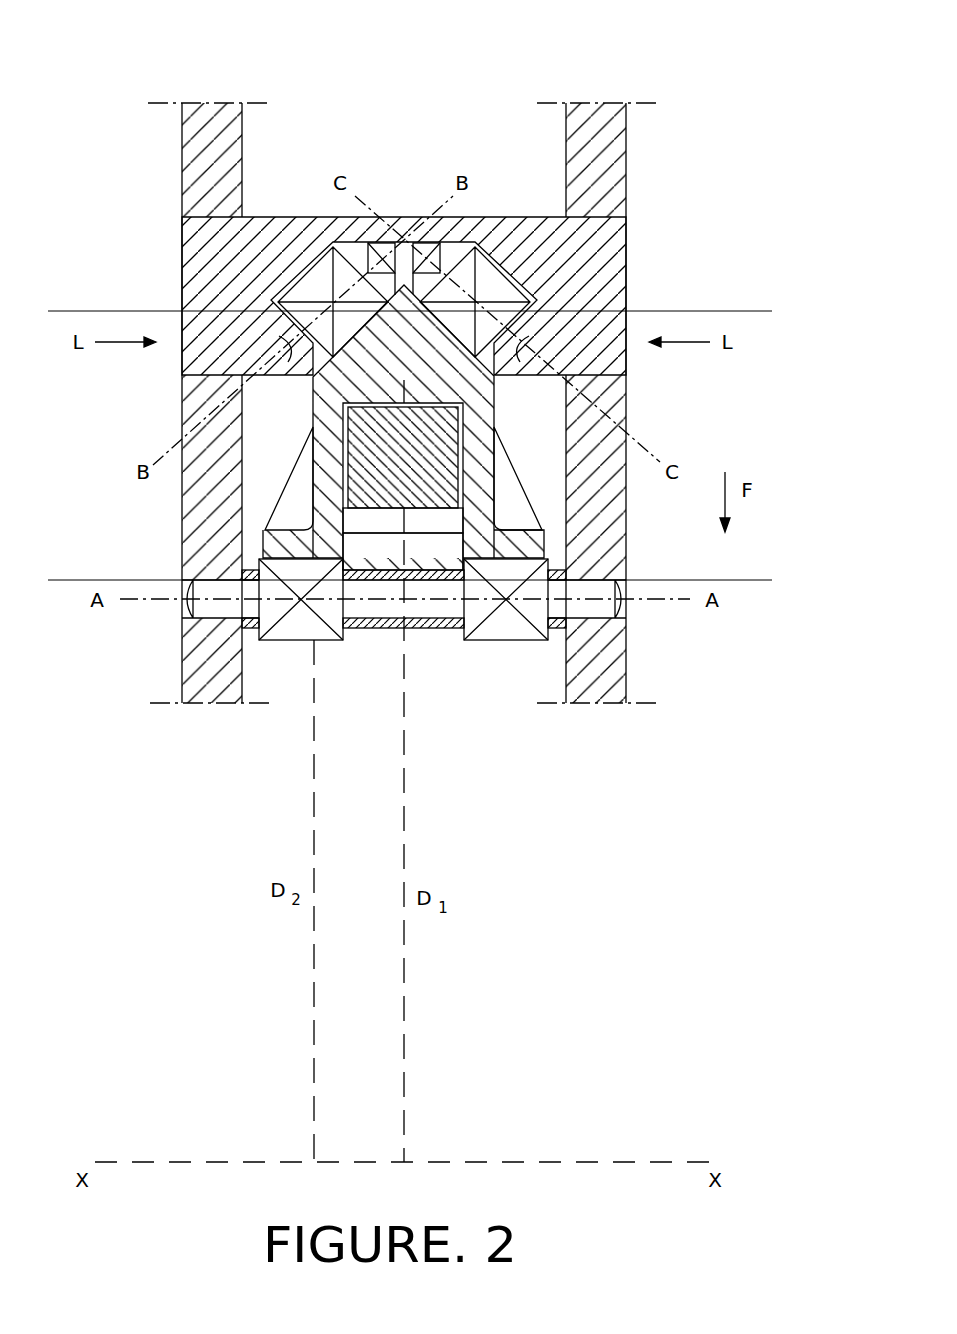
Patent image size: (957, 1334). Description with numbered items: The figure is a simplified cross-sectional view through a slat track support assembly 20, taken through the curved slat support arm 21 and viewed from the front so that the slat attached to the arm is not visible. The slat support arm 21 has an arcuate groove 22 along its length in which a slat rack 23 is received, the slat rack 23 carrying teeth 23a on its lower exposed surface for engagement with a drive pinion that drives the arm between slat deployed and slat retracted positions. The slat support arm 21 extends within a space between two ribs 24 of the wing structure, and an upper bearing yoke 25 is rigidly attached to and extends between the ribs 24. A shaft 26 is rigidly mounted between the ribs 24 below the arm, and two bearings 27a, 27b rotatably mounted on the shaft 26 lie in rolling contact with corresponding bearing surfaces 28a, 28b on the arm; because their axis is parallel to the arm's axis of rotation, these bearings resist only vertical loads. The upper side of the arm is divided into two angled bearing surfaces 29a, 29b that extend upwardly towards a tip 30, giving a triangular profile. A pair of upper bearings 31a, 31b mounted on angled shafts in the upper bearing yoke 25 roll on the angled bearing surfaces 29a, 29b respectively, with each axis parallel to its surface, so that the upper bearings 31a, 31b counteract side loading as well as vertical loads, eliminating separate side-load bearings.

The slat track support assembly 20 is at (471, 75).
The slat support arm 21 is at (419, 383).
The arcuate groove 22 is at (388, 559).
The slat rack 23 is at (391, 471).
The teeth 23a is at (428, 523).
The ribs 24 is at (200, 513).
The upper bearing yoke 25 is at (195, 290).
The shaft 26 is at (372, 607).
The bearing 27a is at (288, 632).
The bearing 27b is at (520, 632).
The bearing surface 28a is at (262, 588).
The bearing surface 28b is at (548, 586).
The angled bearing surface 29a is at (335, 362).
The angled bearing surface 29b is at (473, 362).
The tip 30 is at (404, 290).
The upper bearing 31a is at (322, 278).
The upper bearing 31b is at (487, 278).